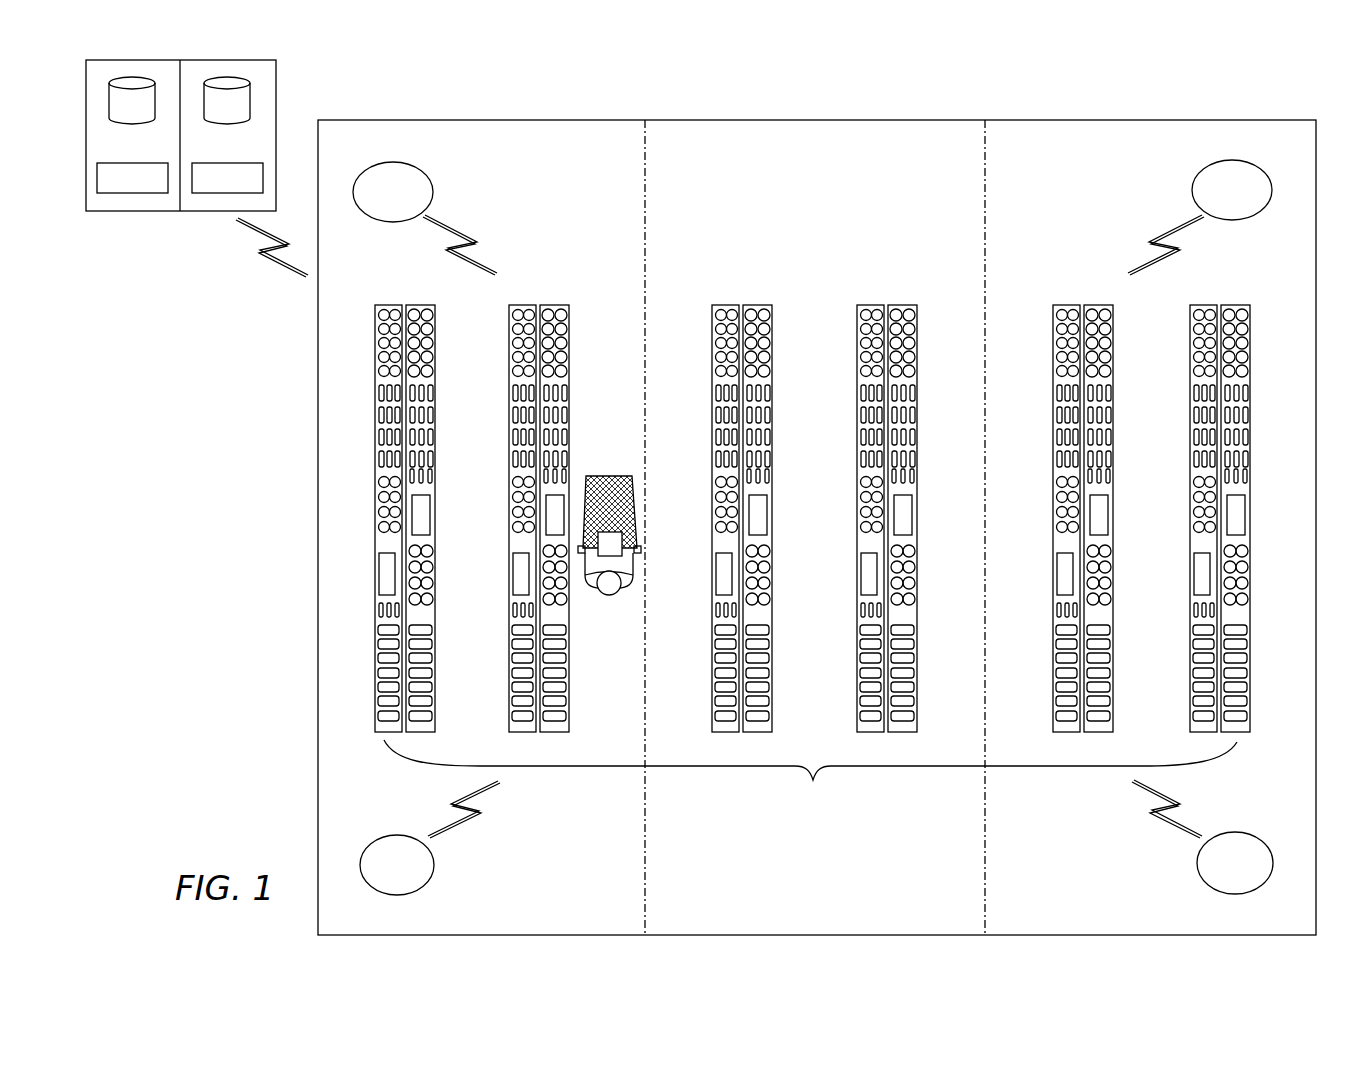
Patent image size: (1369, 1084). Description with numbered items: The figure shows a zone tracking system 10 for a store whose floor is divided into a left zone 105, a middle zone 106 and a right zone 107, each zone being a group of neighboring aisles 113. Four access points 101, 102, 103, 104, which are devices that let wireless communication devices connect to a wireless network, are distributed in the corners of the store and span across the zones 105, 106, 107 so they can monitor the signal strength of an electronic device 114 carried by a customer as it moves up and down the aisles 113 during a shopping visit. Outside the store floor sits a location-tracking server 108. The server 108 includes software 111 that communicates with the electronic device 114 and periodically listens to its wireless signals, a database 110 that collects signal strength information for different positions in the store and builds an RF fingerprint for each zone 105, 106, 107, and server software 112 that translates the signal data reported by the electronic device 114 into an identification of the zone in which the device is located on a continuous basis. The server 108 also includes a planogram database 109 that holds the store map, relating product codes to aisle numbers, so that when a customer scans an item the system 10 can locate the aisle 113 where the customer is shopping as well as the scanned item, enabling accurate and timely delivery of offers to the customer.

The zone tracking system 10 is at (678, 91).
The access point 101 is at (425, 218).
The access point 102 is at (1200, 217).
The access point 103 is at (1202, 837).
The access point 104 is at (430, 838).
The left zone 105 is at (475, 451).
The middle zone 106 is at (814, 451).
The right zone 107 is at (1148, 451).
The location-tracking server 108 is at (277, 79).
The planogram database 109 is at (227, 100).
The database 110 is at (132, 100).
The software 111 is at (132, 178).
The server software 112 is at (227, 178).
The aisles 113 is at (810, 775).
The electronic device 114 is at (626, 530).